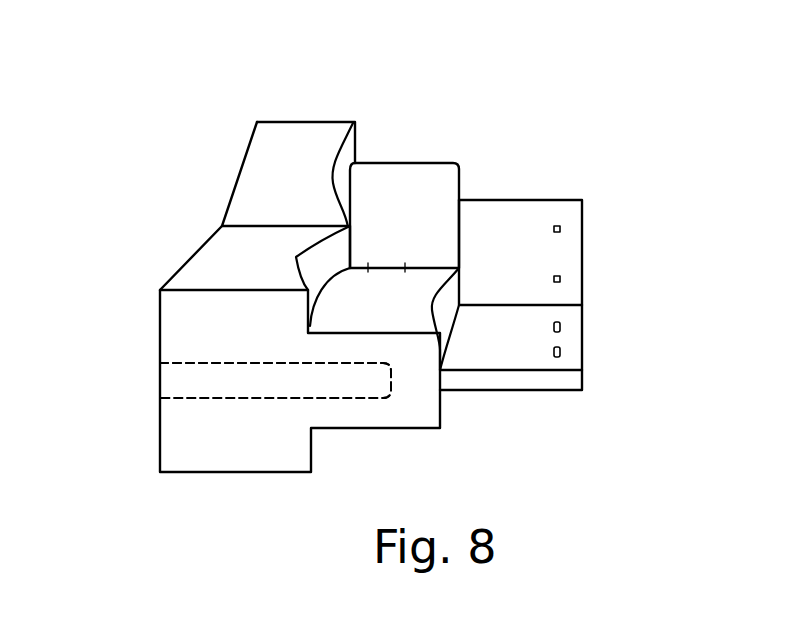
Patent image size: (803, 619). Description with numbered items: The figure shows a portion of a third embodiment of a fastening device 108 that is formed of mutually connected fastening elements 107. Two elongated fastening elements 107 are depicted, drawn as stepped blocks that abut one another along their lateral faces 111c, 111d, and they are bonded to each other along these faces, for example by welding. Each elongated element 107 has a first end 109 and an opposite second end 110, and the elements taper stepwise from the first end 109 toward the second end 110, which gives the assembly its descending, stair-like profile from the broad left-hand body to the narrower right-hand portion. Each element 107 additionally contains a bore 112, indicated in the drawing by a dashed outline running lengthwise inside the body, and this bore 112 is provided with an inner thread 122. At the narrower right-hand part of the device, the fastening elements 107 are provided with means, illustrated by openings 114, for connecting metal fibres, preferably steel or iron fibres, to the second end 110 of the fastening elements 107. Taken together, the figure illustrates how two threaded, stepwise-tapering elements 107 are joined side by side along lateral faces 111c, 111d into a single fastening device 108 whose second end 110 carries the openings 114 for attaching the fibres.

The fastening element 107 is at (290, 140).
The fastening device 108 is at (379, 140).
The first end 109 is at (160, 318).
The second end 110 is at (582, 380).
The lateral face 111c is at (255, 235).
The lateral face 111d is at (297, 232).
The bore 112 is at (160, 385).
The openings 114 is at (560, 229).
The inner thread 122 is at (230, 391).